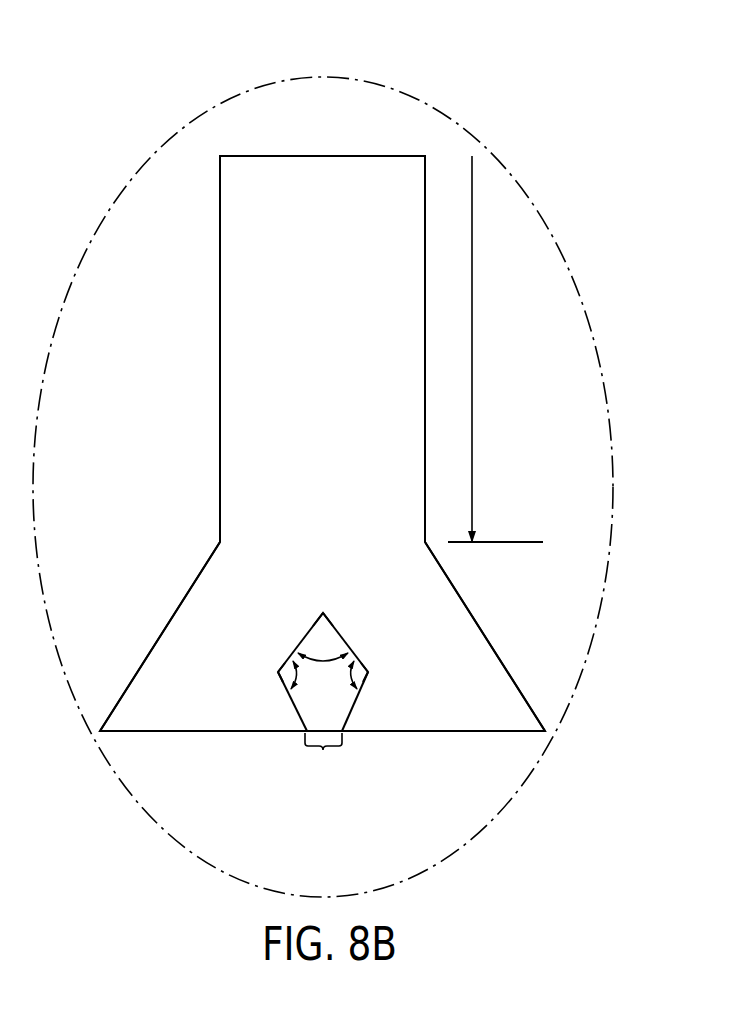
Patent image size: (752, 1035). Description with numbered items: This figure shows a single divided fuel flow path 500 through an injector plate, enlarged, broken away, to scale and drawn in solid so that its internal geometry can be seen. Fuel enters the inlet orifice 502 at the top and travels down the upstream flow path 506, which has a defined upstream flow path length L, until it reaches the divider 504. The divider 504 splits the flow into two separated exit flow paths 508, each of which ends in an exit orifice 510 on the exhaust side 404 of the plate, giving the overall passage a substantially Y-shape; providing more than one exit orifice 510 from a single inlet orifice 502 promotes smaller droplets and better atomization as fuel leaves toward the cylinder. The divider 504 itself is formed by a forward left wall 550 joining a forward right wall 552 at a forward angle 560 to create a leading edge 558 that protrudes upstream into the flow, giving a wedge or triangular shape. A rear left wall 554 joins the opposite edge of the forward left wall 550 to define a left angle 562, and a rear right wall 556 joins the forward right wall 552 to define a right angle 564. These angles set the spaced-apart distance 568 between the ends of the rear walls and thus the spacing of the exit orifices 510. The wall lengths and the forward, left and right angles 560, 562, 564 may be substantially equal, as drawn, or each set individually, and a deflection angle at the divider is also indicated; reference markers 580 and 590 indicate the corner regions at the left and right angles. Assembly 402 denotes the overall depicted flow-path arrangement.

The nozzle assembly 402 is at (390, 121).
The exhaust side 404 is at (315, 752).
The fuel flow path 500 is at (200, 333).
The inlet orifice 502 is at (265, 155).
The divider 504 is at (340, 681).
The upstream flow path 506 is at (308, 432).
The exit flow paths 508 is at (189, 660).
The exit orifice 510 is at (203, 732).
The forward left wall 550 is at (303, 639).
The forward right wall 552 is at (332, 614).
The rear left wall 554 is at (288, 697).
The rear right wall 556 is at (358, 694).
The leading edge 558 is at (323, 613).
The forward angle 560 is at (326, 657).
The left angle 562 is at (278, 672).
The right angle 564 is at (368, 672).
The spaced-apart distance 568 is at (330, 749).
The left vertex 580 is at (277, 674).
The right vertex 590 is at (369, 673).
The upstream flow path length L is at (473, 353).